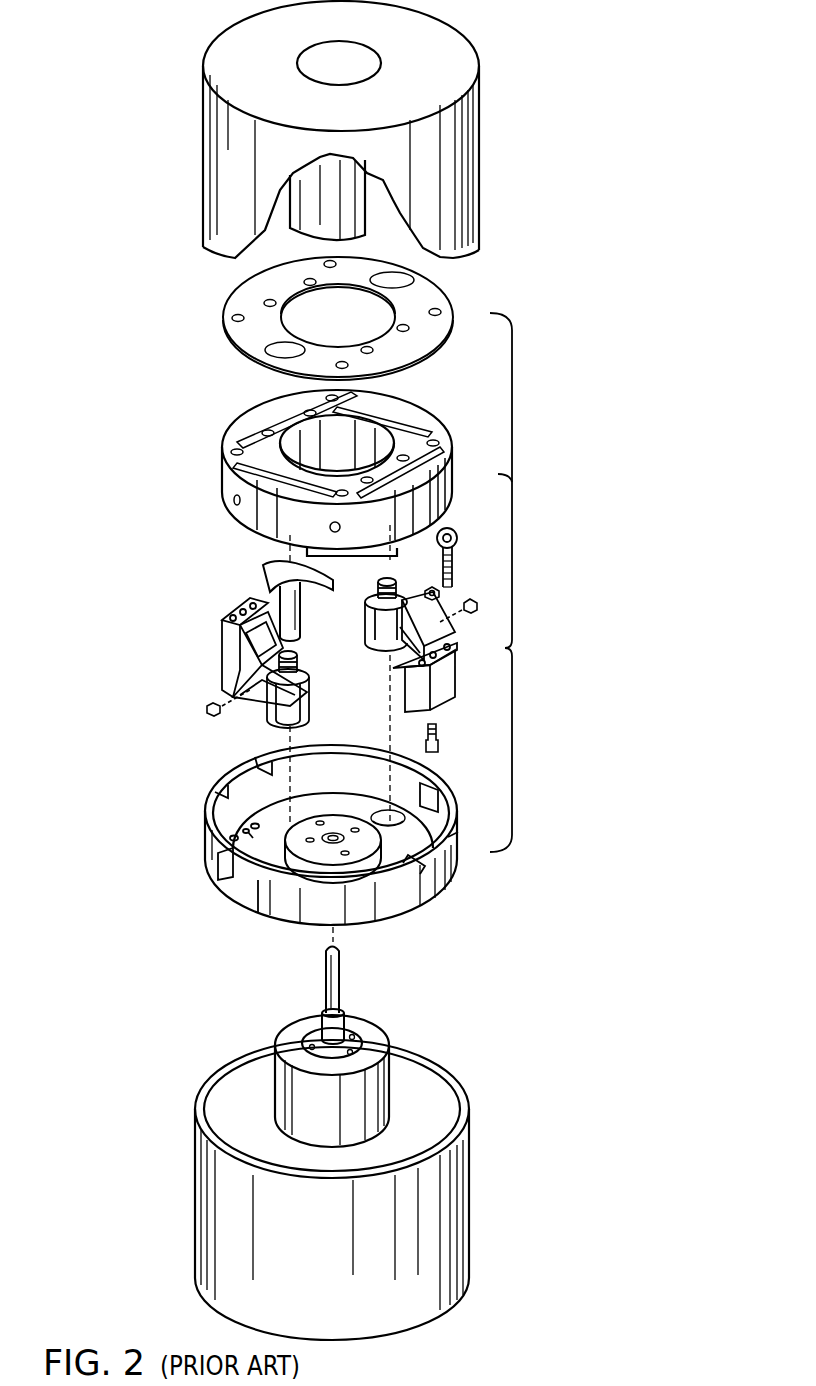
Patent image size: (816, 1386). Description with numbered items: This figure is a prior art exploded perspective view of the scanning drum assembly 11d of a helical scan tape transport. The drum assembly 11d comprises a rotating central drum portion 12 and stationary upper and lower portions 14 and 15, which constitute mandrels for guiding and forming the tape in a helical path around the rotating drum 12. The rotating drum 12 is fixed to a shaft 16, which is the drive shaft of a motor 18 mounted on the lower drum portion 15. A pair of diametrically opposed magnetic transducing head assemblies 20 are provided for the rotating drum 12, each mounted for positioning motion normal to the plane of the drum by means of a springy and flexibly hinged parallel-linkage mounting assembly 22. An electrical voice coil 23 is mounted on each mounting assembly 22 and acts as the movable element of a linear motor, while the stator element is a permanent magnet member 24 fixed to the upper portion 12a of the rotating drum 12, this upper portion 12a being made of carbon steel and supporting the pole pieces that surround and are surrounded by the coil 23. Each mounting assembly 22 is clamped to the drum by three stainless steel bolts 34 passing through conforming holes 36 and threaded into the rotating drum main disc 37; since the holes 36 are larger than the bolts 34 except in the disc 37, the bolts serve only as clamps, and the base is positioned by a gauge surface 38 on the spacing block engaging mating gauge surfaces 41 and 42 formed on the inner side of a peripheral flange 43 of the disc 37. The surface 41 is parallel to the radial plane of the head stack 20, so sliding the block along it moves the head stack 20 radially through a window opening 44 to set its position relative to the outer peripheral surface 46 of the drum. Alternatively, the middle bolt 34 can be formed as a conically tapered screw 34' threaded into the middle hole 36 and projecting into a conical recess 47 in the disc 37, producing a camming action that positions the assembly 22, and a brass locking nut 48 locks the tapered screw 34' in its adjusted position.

The drum assembly 11d is at (509, 1172).
The rotating central drum portion 12 is at (521, 582).
The upper portion of rotating drum 12a is at (222, 484).
The upper drum portion 14 is at (478, 160).
The lower drum portion 15 is at (463, 1160).
The shaft 16 is at (342, 980).
The motor 18 is at (295, 1032).
The magnetic transducing head assembly 20 is at (211, 706).
The parallel-linkage mounting assembly 22 is at (210, 650).
The voice coil 23 is at (300, 662).
The permanent magnet member 24 is at (278, 598).
The clamping bolt 34 is at (464, 542).
The conically tapered screw 34' is at (460, 735).
The hole 36 is at (275, 827).
The rotating drum main disc 37 is at (195, 805).
The gauge surface 38 is at (452, 672).
The gauge surface 41 is at (256, 803).
The gauge surface 42 is at (262, 762).
The peripheral flange 43 is at (225, 795).
The window opening 44 is at (212, 868).
The outer peripheral surface 46 is at (260, 895).
The conical recess 47 is at (329, 846).
The locking nut 48 is at (430, 587).